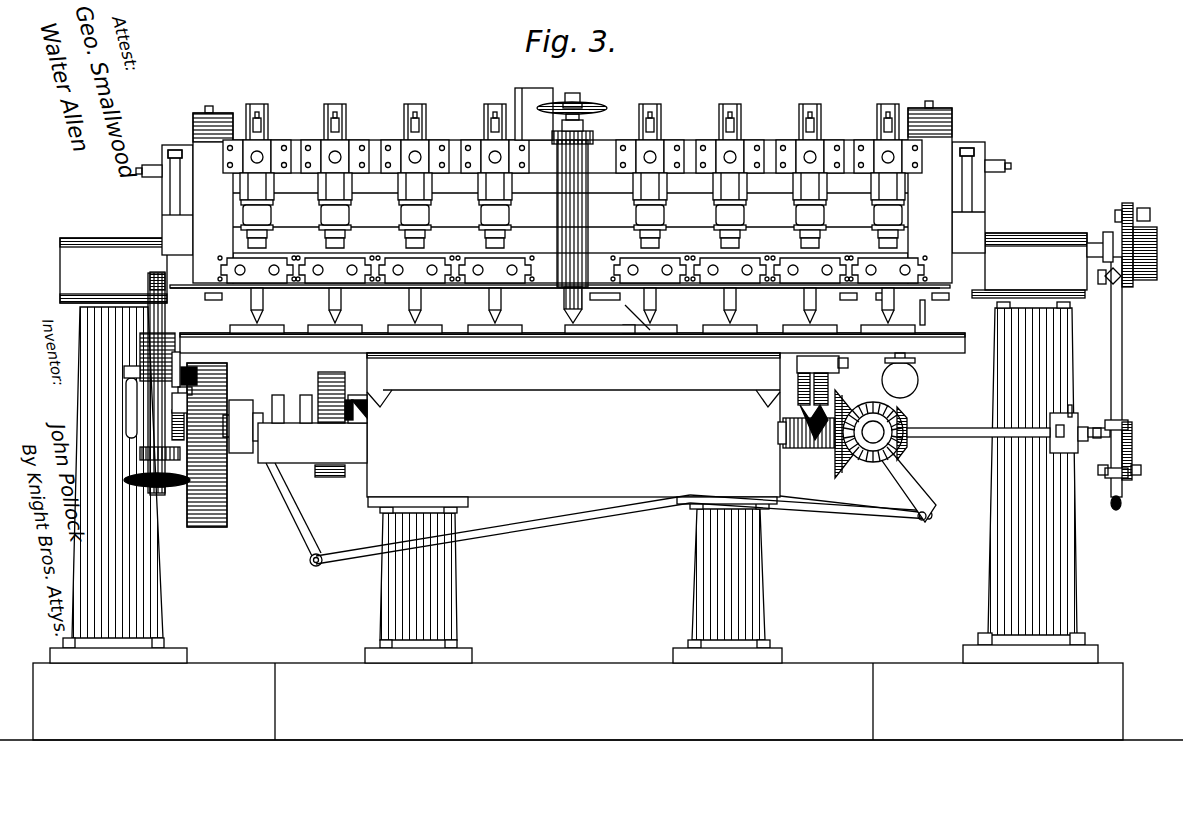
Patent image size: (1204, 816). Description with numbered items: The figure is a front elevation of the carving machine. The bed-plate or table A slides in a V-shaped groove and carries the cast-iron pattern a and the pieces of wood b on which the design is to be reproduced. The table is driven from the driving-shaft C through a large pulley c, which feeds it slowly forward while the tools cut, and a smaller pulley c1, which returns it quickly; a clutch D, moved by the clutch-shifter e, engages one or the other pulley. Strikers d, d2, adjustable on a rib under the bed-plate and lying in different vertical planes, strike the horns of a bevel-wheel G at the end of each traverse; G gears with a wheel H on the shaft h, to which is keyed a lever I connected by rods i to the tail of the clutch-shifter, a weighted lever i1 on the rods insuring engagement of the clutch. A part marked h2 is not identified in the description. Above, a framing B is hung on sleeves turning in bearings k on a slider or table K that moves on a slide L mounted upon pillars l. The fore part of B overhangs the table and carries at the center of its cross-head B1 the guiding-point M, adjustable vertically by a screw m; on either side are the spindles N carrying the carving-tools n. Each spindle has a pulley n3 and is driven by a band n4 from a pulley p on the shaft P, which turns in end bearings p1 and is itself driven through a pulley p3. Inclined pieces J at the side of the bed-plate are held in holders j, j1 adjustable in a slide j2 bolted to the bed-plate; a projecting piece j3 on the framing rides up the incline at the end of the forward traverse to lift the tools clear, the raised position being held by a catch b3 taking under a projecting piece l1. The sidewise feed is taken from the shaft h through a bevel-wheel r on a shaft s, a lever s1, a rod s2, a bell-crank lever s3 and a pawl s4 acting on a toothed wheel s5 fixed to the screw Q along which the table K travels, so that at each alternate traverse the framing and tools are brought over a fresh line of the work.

The bed-plate A is at (572, 343).
The pattern a is at (600, 321).
The framing B is at (572, 113).
The cross-head B1 is at (572, 195).
The pieces of wood or other material b is at (572, 328).
The catch b3 is at (925, 312).
The driving-shaft C is at (199, 445).
The pulley c is at (352, 425).
The pulley c1 is at (331, 397).
The clutch D is at (312, 428).
The striker d is at (798, 380).
The striker d2 is at (830, 382).
The clutch-shifter e is at (294, 514).
The bevel-wheel G is at (819, 439).
The wheel H is at (873, 426).
The shaft h is at (873, 432).
The ball h2 is at (910, 364).
The lever I is at (906, 486).
The rods i is at (624, 529).
The weighted lever i1 is at (637, 309).
The inclined piece J is at (170, 308).
The holder j is at (157, 430).
The holder j1 is at (165, 337).
The slide j2 is at (187, 384).
The projecting piece j3 is at (148, 283).
The slider or table K is at (573, 198).
The bearings k is at (571, 174).
The slide L is at (573, 268).
The pillars l is at (574, 482).
The projecting piece l1 is at (940, 300).
The guiding-point M is at (570, 221).
The screw m is at (574, 101).
The spindles N is at (572, 241).
The carving-tools n is at (262, 312).
The pulley n3 is at (274, 204).
The bands n4 is at (683, 208).
The shaft P is at (570, 183).
The pulleys p is at (270, 122).
The bearings p1 is at (573, 176).
The pulley p3 is at (520, 92).
The screw Q is at (1103, 250).
The bevel-wheel r is at (908, 414).
The shaft s is at (1008, 435).
The lever s1 is at (1133, 462).
The rod s2 is at (1122, 370).
The bell-crank lever s3 is at (1125, 236).
The pawl s4 is at (1145, 208).
The toothed wheel s5 is at (1158, 240).